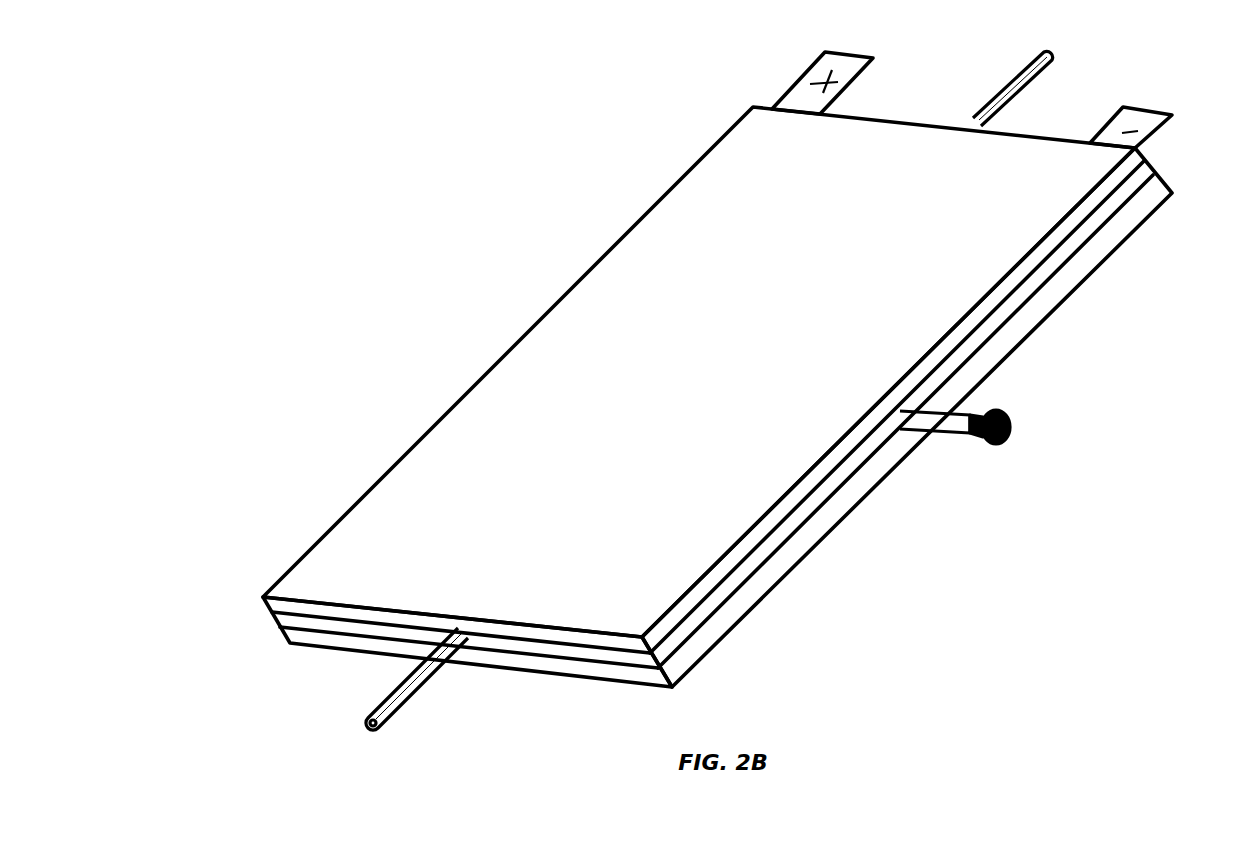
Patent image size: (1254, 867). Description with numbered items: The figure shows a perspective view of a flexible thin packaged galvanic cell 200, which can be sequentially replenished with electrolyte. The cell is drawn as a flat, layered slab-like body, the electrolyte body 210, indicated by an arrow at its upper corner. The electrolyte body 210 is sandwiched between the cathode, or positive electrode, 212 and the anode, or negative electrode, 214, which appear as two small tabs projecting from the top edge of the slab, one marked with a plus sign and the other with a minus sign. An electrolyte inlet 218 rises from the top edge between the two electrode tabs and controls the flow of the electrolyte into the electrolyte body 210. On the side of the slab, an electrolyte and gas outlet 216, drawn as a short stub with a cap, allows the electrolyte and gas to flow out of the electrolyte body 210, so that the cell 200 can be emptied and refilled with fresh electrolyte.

The flexible thin packaged galvanic cell 200 is at (172, 774).
The electrolyte body 210 is at (1162, 163).
The cathode (positive electrode) 212 is at (822, 68).
The anode (negative electrode) 214 is at (1131, 114).
The electrolyte and gas outlet 216 is at (980, 427).
The electrolyte inlet 218 is at (1018, 74).